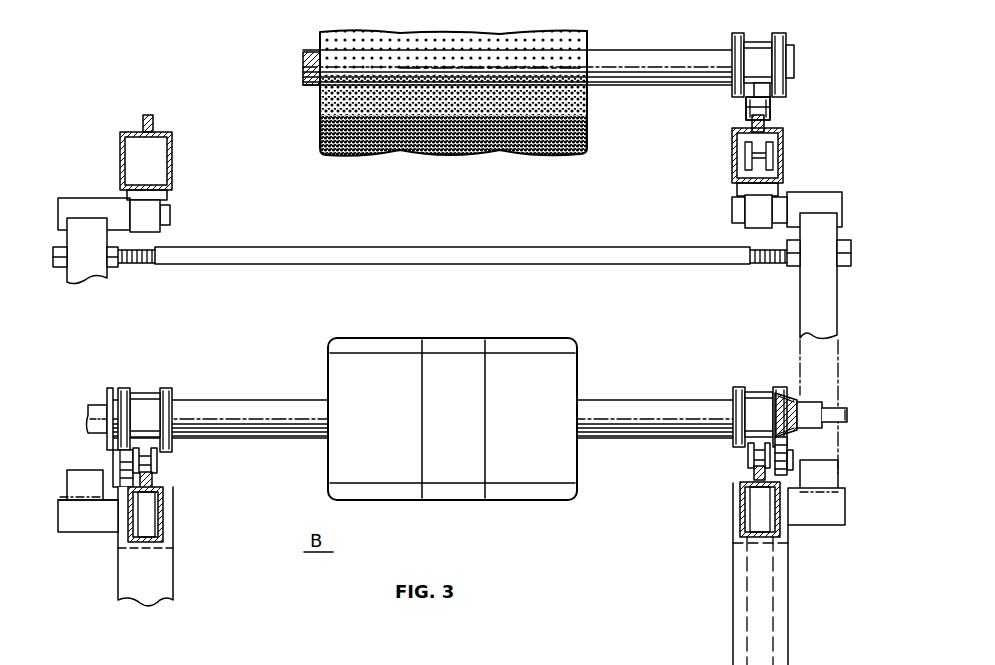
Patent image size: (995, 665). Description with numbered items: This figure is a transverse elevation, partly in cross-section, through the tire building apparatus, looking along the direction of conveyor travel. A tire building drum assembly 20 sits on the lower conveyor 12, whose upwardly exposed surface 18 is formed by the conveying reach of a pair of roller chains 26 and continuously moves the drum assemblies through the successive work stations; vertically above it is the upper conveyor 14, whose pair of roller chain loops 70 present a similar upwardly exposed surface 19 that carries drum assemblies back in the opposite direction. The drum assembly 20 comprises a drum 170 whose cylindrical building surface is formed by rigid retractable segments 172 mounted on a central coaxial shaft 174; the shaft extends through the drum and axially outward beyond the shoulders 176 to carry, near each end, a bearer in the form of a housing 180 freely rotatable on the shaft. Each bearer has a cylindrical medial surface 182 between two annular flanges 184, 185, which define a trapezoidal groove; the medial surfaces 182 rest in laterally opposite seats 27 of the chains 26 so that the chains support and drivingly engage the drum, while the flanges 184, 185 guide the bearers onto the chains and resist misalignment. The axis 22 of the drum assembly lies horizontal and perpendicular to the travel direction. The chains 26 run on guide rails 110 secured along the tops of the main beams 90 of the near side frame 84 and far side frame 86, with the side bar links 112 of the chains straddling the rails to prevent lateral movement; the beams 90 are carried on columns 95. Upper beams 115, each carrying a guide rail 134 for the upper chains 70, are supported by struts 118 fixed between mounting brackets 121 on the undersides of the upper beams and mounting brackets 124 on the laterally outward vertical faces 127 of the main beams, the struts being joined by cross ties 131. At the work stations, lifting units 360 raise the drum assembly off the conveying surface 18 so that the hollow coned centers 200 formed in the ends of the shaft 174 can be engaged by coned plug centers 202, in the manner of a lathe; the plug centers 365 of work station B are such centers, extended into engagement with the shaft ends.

The lower conveyor 12 is at (742, 463).
The upper conveyor 14 is at (775, 108).
The upwardly exposed surface 18 is at (733, 436).
The upwardly exposed surface 19 is at (748, 81).
The tire building drum assembly 20 is at (318, 84).
The axis 22 is at (615, 64).
The roller chain 26 is at (155, 476).
The seat 27 is at (770, 84).
The roller chain loop 70 is at (770, 146).
The near side frame 84 is at (175, 597).
The far side frame 86 is at (732, 661).
The main beam 90 is at (165, 525).
The column 95 is at (130, 578).
The guide rail 110 is at (150, 496).
The side bar link 112 is at (158, 460).
The upper beam 115 is at (732, 170).
The strut 118 is at (825, 310).
The mounting bracket 121 is at (765, 215).
The mounting bracket 124 is at (92, 523).
The laterally outward vertical face 127 is at (130, 518).
The cross tie 131 is at (279, 260).
The guide rail 134 is at (752, 125).
The drum 170 is at (457, 401).
The rigid retractable segment 172 is at (346, 488).
The central coaxial shaft 174 is at (656, 74).
The shoulder 176 is at (329, 360).
The housing 180 is at (483, 236).
The cylindrical medial surface 182 is at (758, 41).
The annular flange 184 is at (781, 50).
The annular flange 185 is at (734, 35).
The hollow coned center 200 is at (787, 400).
The coned plug center 202 is at (800, 415).
The lifting unit 360 is at (115, 457).
The plug center 365 is at (88, 410).